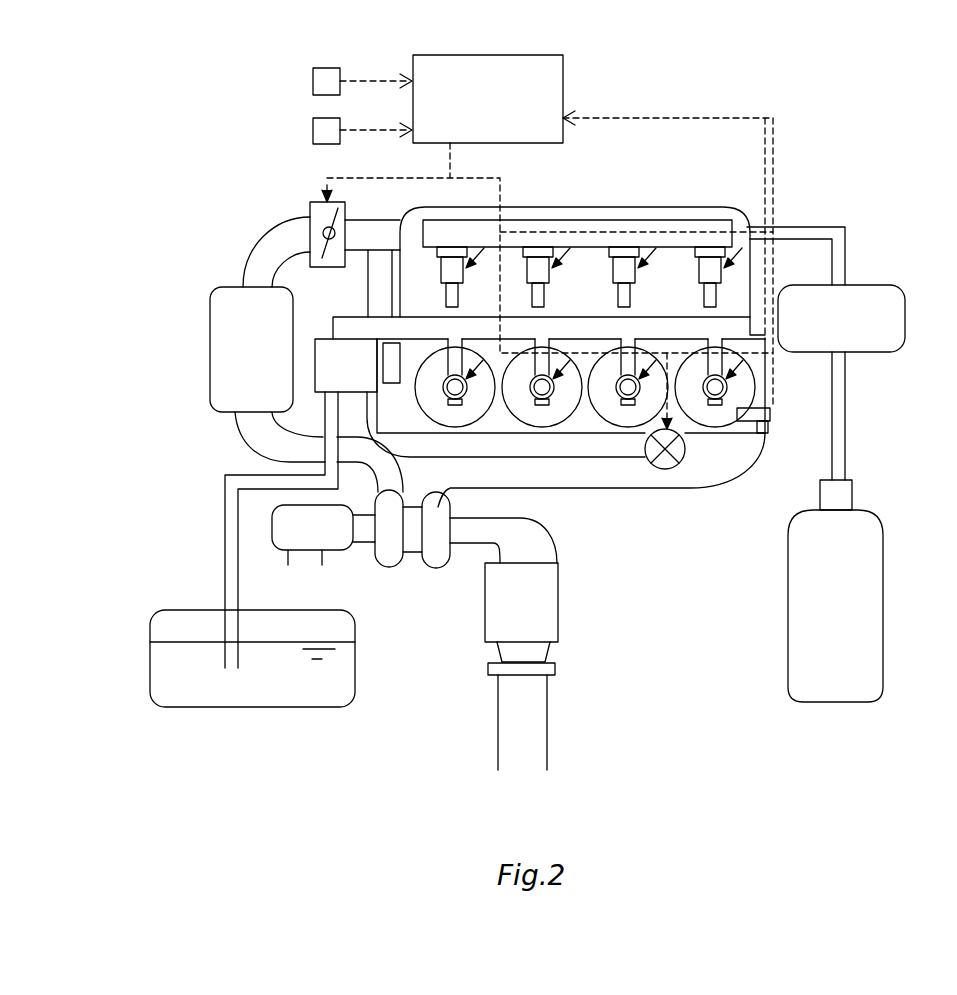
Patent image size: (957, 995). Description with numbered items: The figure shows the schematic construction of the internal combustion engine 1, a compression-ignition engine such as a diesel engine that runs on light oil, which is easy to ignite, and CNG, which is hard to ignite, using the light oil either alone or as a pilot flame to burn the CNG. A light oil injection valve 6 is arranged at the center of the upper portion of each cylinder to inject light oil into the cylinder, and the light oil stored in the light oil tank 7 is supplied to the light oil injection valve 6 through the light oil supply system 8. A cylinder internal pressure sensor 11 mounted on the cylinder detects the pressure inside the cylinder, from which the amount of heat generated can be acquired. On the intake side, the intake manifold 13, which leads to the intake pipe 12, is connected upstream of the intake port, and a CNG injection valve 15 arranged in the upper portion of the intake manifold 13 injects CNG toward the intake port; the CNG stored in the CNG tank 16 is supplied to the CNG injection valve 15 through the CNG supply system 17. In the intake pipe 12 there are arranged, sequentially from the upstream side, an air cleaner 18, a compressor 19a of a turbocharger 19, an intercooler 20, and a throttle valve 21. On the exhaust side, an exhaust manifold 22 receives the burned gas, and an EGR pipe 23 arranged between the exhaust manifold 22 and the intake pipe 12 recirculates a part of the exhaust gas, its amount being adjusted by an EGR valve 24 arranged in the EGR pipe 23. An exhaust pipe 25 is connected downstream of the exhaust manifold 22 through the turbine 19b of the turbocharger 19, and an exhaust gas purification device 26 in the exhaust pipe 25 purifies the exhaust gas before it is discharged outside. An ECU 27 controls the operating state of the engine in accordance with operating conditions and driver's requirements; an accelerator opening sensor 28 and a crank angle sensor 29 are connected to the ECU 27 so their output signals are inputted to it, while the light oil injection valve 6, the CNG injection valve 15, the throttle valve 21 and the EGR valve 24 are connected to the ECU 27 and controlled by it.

The internal combustion engine 1 is at (775, 193).
The light oil injection valve 6 is at (765, 398).
The light oil tank 7 is at (150, 652).
The light oil supply system 8 is at (224, 512).
The cylinder internal pressure sensor 11 is at (767, 433).
The intake pipe 12 is at (268, 237).
The intake manifold 13 is at (688, 207).
The CNG injection valve 15 is at (728, 271).
The CNG tank 16 is at (883, 582).
The CNG supply system 17 is at (845, 380).
The air cleaner 18 is at (272, 545).
The turbocharger 19 is at (478, 647).
The compressor 19a is at (388, 567).
The turbine 19b is at (440, 568).
The intercooler 20 is at (208, 372).
The throttle valve 21 is at (310, 212).
The exhaust manifold 22 is at (703, 487).
The EGR pipe 23 is at (568, 458).
The EGR valve 24 is at (665, 469).
The exhaust pipe 25 is at (547, 708).
The exhaust gas purification device 26 is at (558, 610).
The ECU 27 is at (563, 102).
The accelerator opening sensor 28 is at (313, 80).
The crank angle sensor 29 is at (313, 136).